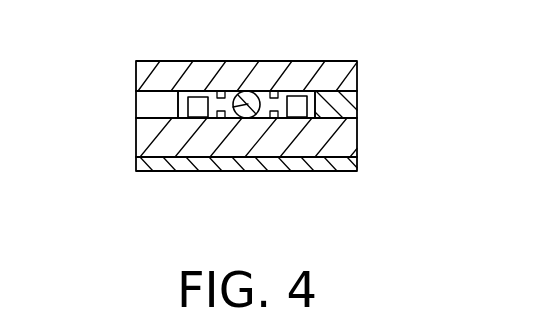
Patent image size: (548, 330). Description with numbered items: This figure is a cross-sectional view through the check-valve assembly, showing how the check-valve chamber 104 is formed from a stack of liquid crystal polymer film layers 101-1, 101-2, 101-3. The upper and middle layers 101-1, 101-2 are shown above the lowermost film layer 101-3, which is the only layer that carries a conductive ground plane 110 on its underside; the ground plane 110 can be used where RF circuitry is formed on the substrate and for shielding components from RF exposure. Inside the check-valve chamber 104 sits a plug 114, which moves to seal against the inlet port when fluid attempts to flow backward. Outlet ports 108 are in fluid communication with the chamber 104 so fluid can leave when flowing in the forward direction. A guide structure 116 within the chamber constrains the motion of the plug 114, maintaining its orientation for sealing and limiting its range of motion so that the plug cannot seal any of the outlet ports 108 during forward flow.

The LCP film layer 101-1 is at (357, 75).
The LCP film layer 101-2 is at (357, 110).
The lowermost film layer 101-3 is at (357, 138).
The check-valve chamber 104 is at (184, 98).
The outlet port 108 is at (200, 92).
The conductive ground plane 110 is at (165, 172).
The plug 114 is at (233, 107).
The guide structure 116 is at (222, 118).